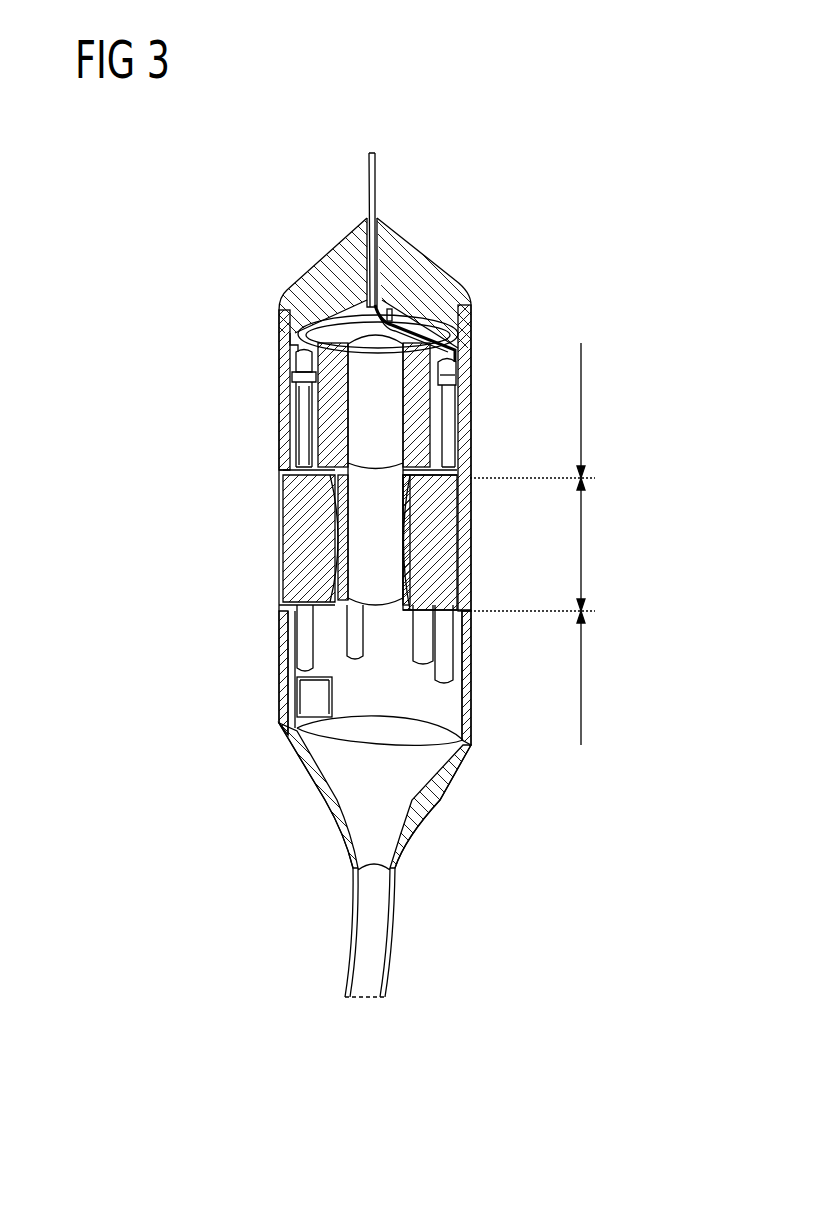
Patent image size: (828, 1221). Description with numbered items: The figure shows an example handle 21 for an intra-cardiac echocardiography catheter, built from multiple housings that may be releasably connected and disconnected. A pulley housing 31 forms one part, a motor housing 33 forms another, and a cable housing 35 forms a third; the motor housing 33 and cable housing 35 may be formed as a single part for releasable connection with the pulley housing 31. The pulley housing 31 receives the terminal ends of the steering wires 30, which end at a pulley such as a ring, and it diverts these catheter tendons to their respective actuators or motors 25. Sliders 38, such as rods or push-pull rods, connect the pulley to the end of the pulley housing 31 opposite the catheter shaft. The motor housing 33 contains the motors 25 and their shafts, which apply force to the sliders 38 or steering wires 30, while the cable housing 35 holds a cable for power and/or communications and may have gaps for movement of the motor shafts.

The handle 21 is at (334, 567).
The motors 25 is at (299, 529).
The steering wires 30 is at (409, 318).
The pulley housing 31 is at (582, 401).
The motor housing 33 is at (582, 544).
The cable housing 35 is at (582, 678).
The sliders 38 is at (289, 357).